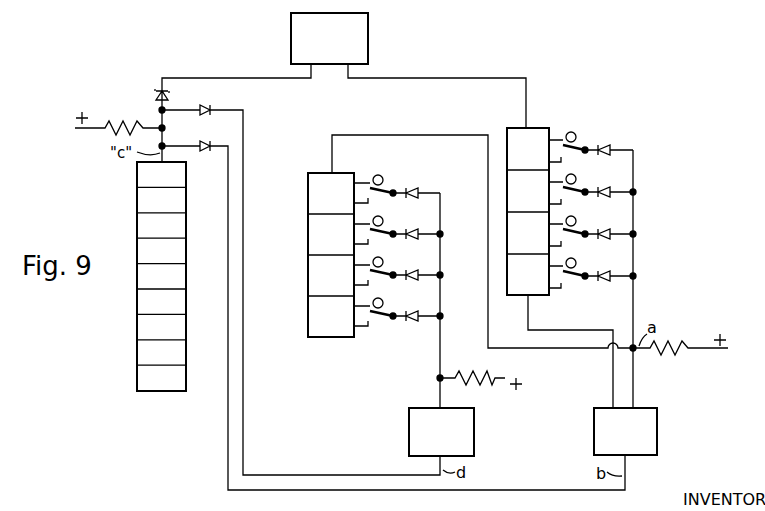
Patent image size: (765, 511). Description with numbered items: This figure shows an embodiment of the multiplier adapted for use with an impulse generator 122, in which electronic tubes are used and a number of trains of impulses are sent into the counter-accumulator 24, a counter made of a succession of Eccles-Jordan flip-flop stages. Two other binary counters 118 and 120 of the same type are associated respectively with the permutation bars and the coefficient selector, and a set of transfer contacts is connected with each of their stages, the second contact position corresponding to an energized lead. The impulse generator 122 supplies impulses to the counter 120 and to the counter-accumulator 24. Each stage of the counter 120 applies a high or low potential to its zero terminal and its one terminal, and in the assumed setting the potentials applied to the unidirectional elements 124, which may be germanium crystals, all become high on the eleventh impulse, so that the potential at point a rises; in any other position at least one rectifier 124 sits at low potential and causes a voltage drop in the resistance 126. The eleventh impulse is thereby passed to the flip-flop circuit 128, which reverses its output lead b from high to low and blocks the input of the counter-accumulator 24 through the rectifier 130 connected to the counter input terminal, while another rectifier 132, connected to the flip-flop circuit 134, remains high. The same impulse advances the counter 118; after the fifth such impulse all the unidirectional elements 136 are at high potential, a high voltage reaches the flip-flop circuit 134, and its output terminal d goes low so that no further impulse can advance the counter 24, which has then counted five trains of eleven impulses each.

The counter-accumulator 24 is at (153, 392).
The binary counter 118 is at (316, 173).
The binary counter 120 is at (536, 128).
The impulse generator 122 is at (314, 50).
The unidirectional elements 124 is at (607, 190).
The resistance 126 is at (665, 355).
The flip-flop circuit 128 is at (610, 442).
The rectifier 130 is at (203, 152).
The rectifier 132 is at (212, 104).
The flip-flop circuit 134 is at (426, 442).
The unidirectional elements 136 is at (413, 231).